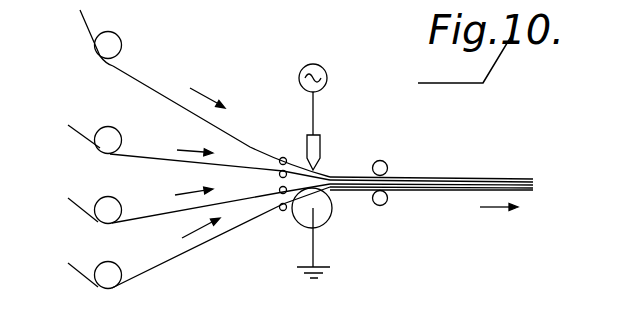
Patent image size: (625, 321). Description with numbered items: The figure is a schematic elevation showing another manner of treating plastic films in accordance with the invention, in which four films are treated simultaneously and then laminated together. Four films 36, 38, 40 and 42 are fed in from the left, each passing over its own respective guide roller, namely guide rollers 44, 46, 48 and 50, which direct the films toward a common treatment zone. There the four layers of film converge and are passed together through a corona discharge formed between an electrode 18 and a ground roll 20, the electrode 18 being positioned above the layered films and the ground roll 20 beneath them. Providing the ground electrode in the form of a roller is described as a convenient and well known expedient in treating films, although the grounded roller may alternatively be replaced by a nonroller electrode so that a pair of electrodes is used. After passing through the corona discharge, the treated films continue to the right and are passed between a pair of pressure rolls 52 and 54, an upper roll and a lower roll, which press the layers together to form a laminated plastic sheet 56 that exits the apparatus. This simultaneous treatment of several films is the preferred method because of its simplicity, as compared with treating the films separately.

The electrode 18 is at (321, 146).
The ground roll 20 is at (328, 222).
The film 36 is at (84, 21).
The film 38 is at (82, 135).
The film 40 is at (82, 208).
The film 42 is at (82, 274).
The guide roller 44 is at (122, 33).
The guide roller 46 is at (116, 128).
The guide roller 48 is at (120, 200).
The guide roller 50 is at (113, 262).
The pressure roll 52 is at (386, 161).
The pressure roll 54 is at (386, 204).
The laminated plastic sheet 56 is at (522, 180).